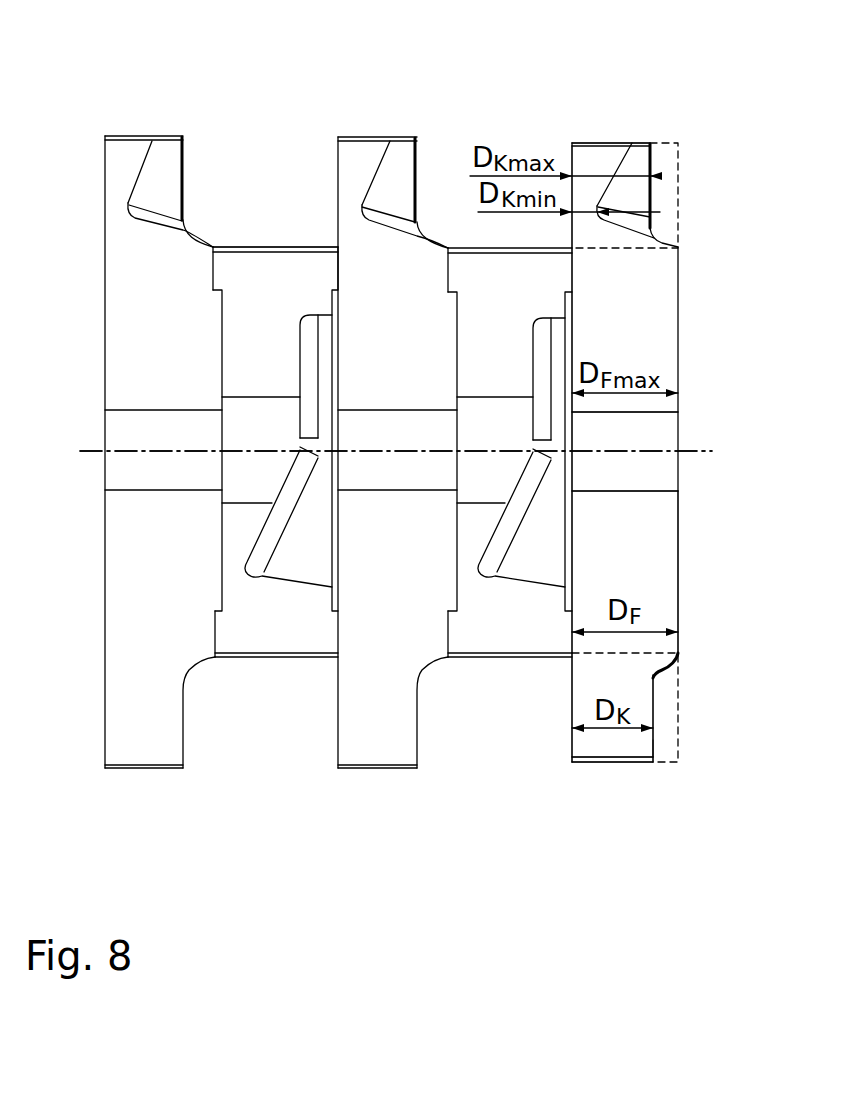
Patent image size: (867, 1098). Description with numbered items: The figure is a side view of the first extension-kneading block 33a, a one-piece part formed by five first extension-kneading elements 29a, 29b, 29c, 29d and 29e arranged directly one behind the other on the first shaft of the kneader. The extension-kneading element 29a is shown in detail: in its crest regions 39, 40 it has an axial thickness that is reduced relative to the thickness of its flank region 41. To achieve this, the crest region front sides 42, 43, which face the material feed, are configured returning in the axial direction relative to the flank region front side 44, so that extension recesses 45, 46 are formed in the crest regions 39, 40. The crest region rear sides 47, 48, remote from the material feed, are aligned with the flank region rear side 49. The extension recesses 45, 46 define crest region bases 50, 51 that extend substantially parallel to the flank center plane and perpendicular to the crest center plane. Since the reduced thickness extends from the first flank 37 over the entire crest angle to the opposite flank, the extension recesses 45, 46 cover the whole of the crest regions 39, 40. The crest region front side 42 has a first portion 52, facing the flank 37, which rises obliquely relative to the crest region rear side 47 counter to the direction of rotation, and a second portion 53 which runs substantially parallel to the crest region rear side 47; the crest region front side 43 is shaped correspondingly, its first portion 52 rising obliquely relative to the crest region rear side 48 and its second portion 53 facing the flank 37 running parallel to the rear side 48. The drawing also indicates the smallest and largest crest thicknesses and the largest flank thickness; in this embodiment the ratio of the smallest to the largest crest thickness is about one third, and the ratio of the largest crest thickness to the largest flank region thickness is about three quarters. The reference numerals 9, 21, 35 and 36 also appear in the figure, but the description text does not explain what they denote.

The axis of rotation 9 is at (635, 450).
The crankshaft 21 is at (768, 100).
The first extension-kneading element 29a is at (691, 318).
The first extension-kneading element 29b is at (469, 236).
The first extension-kneading element 29c is at (390, 125).
The first extension-kneading element 29d is at (261, 235).
The first extension-kneading element 29e is at (135, 124).
The first extension-kneading block 33a is at (322, 96).
The end face of crank web 35 is at (597, 143).
The opposite end face of crank web 36 is at (632, 763).
The first flank 37 is at (667, 473).
The crest region 39 is at (640, 191).
The crest region 40 is at (647, 736).
The flank region 41 is at (667, 569).
The crest region front side 42 is at (663, 215).
The crest region front side 43 is at (666, 698).
The flank region front side 44 is at (680, 618).
The extension recess 45 is at (676, 143).
The extension recess 46 is at (673, 744).
The crest region rear side 47 is at (571, 153).
The crest region rear side 48 is at (572, 748).
The flank region rear side 49 is at (572, 270).
The crest region base 50 is at (681, 232).
The crest region base 51 is at (680, 668).
The first portion 52 is at (629, 162).
The second portion 53 is at (655, 750).